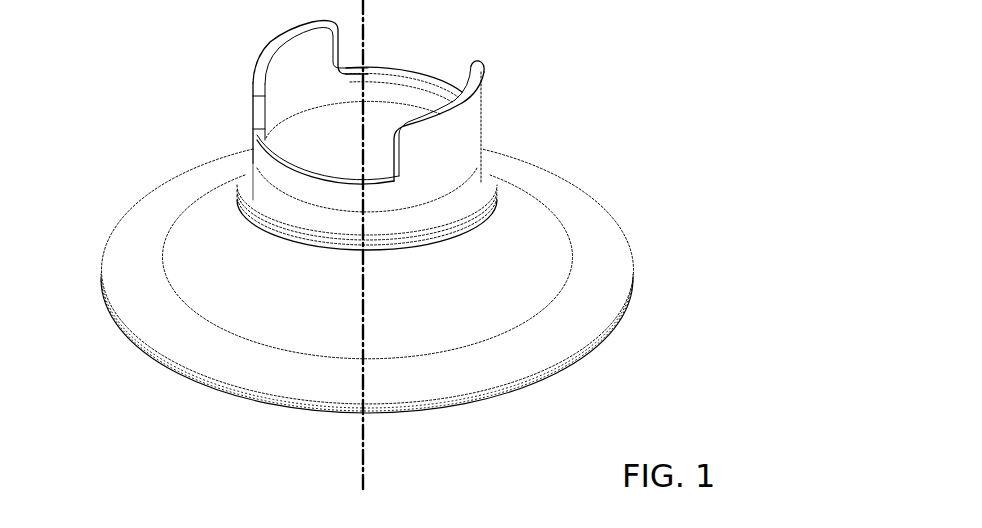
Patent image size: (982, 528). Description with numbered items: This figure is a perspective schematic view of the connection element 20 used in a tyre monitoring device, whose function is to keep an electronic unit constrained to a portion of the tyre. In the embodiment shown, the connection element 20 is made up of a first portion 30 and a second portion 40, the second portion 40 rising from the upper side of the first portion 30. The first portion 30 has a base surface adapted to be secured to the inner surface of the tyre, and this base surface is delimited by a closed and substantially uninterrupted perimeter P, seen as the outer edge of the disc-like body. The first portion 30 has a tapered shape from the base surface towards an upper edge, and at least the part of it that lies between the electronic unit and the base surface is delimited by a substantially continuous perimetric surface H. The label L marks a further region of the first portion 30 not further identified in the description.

The connection element 20 is at (600, 138).
The first portion 30 is at (592, 250).
The second portion 40 is at (479, 104).
The top land surface L is at (212, 257).
The perimetric surface H is at (182, 322).
The perimeter P is at (575, 355).